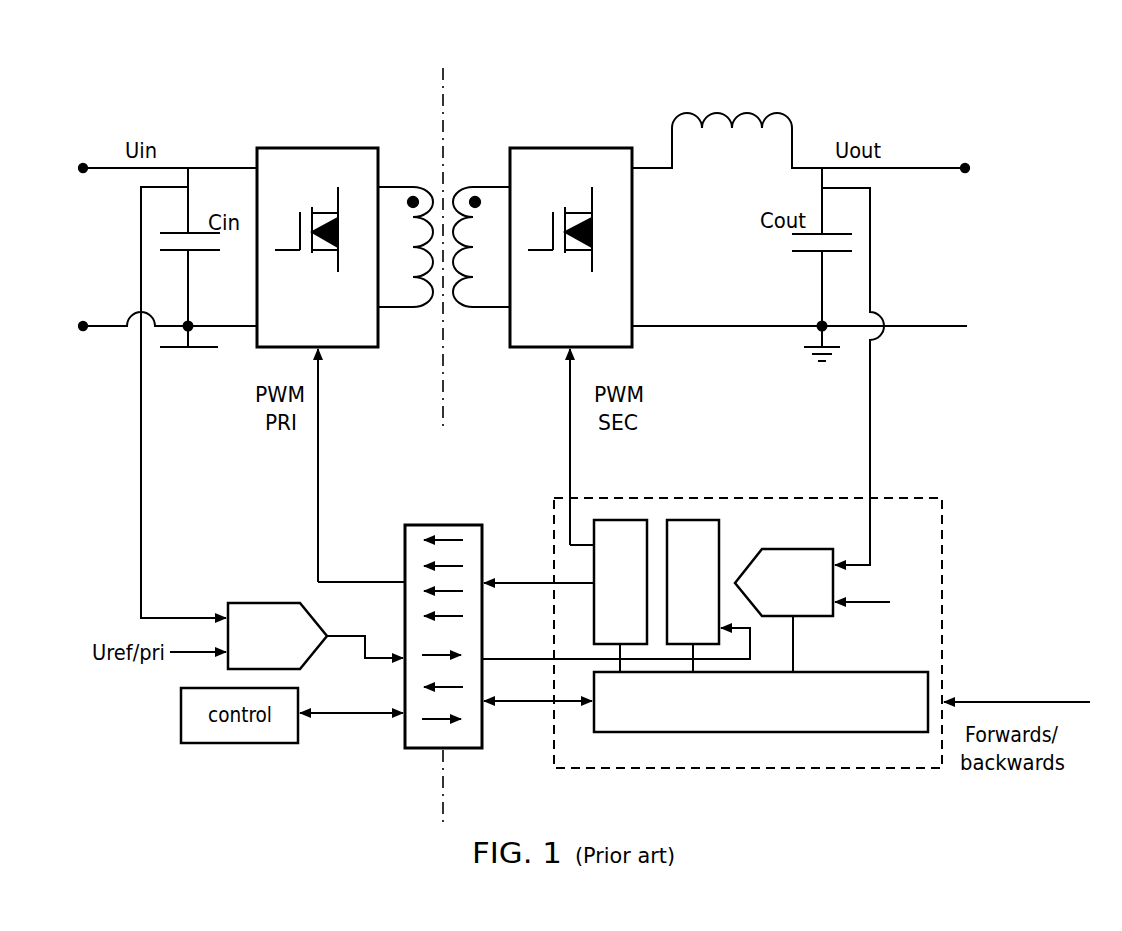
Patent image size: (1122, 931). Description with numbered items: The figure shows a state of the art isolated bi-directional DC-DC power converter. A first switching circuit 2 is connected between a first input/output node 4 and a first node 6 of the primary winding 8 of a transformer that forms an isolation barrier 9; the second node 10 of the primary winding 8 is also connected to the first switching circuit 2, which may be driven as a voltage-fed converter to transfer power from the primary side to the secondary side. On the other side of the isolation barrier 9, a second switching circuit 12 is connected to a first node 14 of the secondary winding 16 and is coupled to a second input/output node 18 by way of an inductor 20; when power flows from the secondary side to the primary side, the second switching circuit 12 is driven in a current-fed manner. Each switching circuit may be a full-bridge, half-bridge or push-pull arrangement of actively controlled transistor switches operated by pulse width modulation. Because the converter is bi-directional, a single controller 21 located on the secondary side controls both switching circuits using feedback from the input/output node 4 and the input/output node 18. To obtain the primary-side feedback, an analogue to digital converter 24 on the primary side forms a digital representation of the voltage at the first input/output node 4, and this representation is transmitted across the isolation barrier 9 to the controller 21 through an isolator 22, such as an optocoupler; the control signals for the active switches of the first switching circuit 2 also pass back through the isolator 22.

The first switching circuit 2 is at (257, 148).
The first input/output node 4 is at (83, 165).
The first node of the primary winding 6 is at (395, 187).
The primary winding 8 is at (429, 187).
The isolation barrier 9 is at (443, 78).
The second node of the primary winding 10 is at (397, 310).
The second switching circuit 12 is at (570, 148).
The first node of the secondary winding 14 is at (470, 187).
The secondary winding 16 is at (467, 260).
The second input/output node 18 is at (965, 165).
The inductor 20 is at (775, 112).
The controller 21 is at (942, 498).
The isolator 22 is at (476, 750).
The analogue to digital converter 24 is at (250, 602).